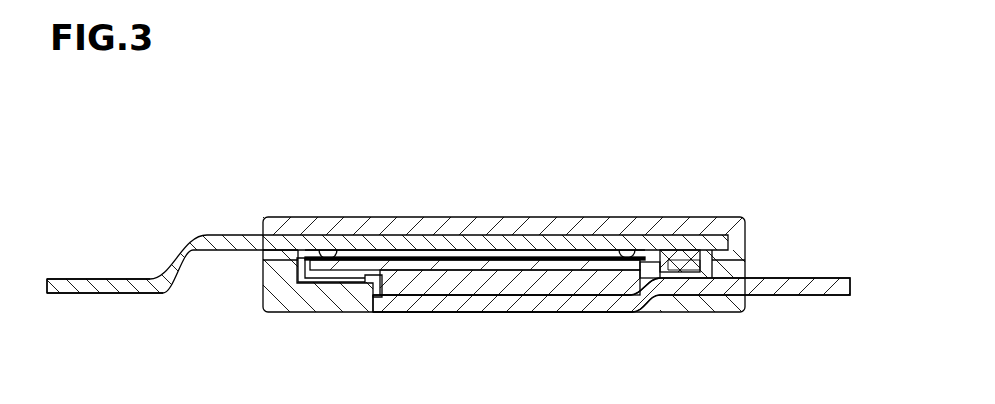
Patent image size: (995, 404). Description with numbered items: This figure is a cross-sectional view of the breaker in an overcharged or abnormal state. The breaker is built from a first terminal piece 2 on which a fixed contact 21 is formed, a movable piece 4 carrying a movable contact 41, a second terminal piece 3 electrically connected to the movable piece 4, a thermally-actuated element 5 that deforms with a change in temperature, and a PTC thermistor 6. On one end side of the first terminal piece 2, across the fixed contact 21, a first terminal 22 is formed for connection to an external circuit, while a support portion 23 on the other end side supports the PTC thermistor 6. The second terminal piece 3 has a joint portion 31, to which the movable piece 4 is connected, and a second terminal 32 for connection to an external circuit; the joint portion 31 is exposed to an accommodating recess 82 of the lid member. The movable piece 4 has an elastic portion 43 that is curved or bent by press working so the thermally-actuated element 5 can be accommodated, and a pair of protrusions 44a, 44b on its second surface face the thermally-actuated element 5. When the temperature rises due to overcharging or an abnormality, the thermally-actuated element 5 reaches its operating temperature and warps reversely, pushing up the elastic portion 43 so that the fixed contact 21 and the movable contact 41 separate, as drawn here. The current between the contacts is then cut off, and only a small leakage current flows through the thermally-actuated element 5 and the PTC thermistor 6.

The first terminal piece 2 is at (705, 285).
The second terminal piece 3 is at (408, 243).
The movable piece 4 is at (527, 250).
The thermally-actuated element 5 is at (475, 263).
The PTC thermistor 6 is at (455, 283).
The fixed contact 21 is at (681, 278).
The first terminal 22 is at (803, 280).
The support portion 23 is at (485, 300).
The joint portion 31 is at (331, 243).
The second terminal 32 is at (100, 287).
The movable contact 41 is at (668, 280).
The elastic portion 43 is at (567, 256).
The protrusion 44a is at (325, 262).
The protrusion 44b is at (640, 272).
The accommodating recess 82 is at (300, 262).